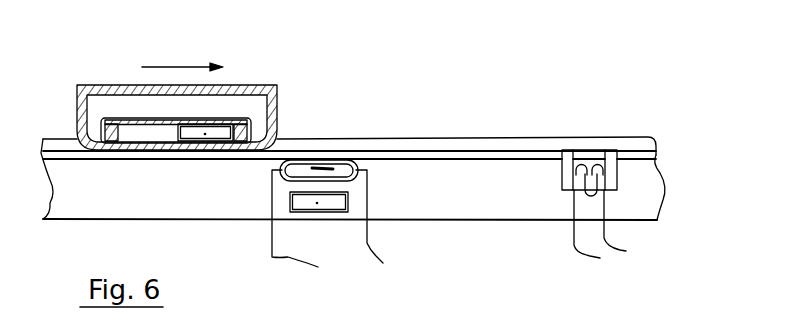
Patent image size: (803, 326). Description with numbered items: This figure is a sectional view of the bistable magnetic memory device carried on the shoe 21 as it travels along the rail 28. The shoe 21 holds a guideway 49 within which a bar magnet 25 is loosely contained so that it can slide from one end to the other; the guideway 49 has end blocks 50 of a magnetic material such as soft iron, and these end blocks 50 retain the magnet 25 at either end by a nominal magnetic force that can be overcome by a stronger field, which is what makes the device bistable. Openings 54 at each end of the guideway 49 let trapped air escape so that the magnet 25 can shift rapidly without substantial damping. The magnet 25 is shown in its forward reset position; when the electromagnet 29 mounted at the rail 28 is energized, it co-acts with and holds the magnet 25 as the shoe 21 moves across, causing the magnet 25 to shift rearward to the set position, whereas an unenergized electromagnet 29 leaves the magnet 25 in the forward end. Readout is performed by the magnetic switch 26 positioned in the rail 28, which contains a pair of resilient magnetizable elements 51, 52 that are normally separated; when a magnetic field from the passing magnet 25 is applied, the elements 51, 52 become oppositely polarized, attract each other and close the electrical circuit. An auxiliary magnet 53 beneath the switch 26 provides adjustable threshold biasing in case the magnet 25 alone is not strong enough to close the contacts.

The shoe 21 is at (245, 85).
The bar magnet 25 is at (205, 136).
The magnetic switch 26 is at (320, 168).
The rail 28 is at (469, 137).
The electromagnet 29 is at (560, 180).
The guideway 49 is at (103, 126).
The end blocks 50 is at (108, 137).
The resilient magnetizable element 51 is at (340, 172).
The resilient magnetizable element 52 is at (295, 179).
The auxiliary magnet 53 is at (317, 206).
The openings 54 is at (127, 120).